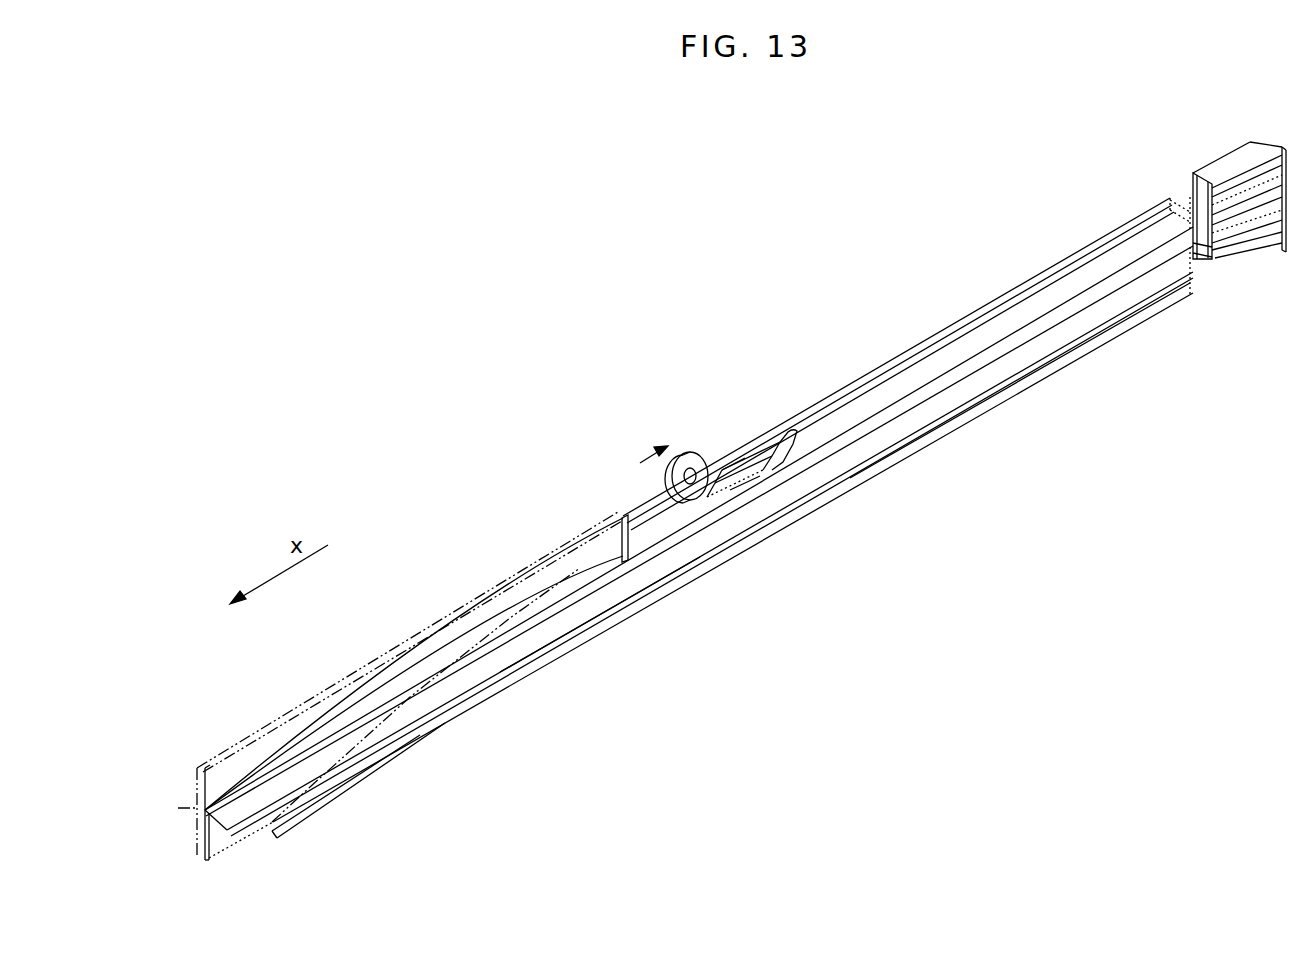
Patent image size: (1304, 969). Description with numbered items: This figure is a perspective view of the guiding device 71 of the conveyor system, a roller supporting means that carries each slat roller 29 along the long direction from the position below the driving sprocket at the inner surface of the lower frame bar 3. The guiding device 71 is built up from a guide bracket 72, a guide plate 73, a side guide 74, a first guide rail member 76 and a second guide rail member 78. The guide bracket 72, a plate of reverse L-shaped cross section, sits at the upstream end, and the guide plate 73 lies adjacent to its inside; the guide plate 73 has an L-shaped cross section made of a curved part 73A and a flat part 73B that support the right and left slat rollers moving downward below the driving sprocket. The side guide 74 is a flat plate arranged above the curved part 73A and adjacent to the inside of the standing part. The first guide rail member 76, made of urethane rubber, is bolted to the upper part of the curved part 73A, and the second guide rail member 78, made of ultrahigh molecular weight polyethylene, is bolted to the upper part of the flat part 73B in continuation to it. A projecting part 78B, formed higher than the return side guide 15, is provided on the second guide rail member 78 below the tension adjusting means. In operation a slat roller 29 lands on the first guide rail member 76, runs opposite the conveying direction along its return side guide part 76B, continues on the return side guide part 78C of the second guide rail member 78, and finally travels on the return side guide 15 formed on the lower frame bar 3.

The lower frame bar 3 is at (1237, 245).
The return side guide 15 is at (1178, 205).
The slat roller 29 is at (686, 452).
The guiding device 71 is at (538, 728).
The guide bracket 72 is at (228, 855).
The guide plate 73 is at (668, 540).
The curved part 73A is at (281, 829).
The flat part 73B is at (855, 448).
The side guide 74 is at (216, 790).
The first guide rail member 76 is at (402, 660).
The return side guide part of the first guide rail member 76B is at (582, 538).
The second guide rail member 78 is at (762, 455).
The projecting part 78B is at (750, 487).
The return side guide part of the second guide rail member 78C is at (745, 470).